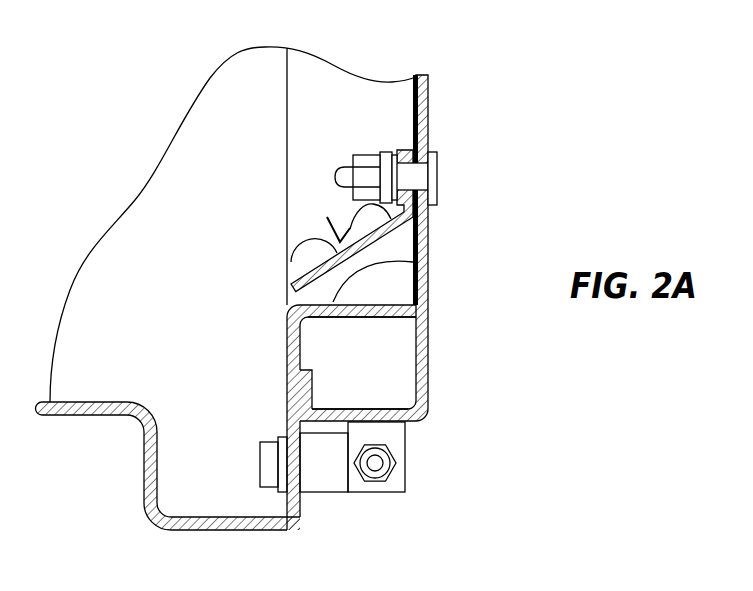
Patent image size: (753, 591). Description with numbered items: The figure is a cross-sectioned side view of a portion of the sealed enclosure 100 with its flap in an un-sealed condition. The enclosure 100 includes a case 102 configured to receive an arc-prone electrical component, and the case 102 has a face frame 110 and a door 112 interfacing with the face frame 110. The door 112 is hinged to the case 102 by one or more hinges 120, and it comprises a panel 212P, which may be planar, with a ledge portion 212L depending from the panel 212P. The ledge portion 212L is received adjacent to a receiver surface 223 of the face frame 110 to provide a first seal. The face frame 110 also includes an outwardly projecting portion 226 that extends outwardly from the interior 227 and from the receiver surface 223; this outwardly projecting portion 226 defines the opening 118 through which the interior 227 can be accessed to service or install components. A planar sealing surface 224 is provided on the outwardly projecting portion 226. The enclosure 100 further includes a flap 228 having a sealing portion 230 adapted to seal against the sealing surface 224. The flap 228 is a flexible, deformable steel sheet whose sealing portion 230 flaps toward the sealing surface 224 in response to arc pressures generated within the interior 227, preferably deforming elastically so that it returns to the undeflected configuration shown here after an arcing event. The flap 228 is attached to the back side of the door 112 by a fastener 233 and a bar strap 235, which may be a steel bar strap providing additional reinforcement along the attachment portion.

The sealed enclosure 100 is at (147, 130).
The case 102 is at (140, 458).
The face frame 110 is at (300, 345).
The door 112 is at (430, 108).
The opening 118 is at (343, 102).
The hinge 120 is at (373, 487).
The panel 212P is at (428, 236).
The ledge portion 212L is at (312, 385).
The receiver surface 223 is at (308, 402).
The sealing surface 224 is at (414, 266).
The outwardly projecting portion 226 is at (428, 308).
The interior 227 is at (157, 336).
The flap 228 is at (288, 285).
The sealing portion 230 is at (322, 218).
The fastener 233 is at (343, 175).
The bar strap 235 is at (403, 150).